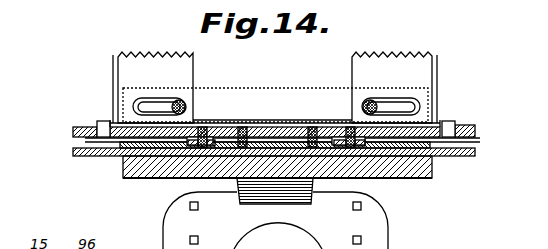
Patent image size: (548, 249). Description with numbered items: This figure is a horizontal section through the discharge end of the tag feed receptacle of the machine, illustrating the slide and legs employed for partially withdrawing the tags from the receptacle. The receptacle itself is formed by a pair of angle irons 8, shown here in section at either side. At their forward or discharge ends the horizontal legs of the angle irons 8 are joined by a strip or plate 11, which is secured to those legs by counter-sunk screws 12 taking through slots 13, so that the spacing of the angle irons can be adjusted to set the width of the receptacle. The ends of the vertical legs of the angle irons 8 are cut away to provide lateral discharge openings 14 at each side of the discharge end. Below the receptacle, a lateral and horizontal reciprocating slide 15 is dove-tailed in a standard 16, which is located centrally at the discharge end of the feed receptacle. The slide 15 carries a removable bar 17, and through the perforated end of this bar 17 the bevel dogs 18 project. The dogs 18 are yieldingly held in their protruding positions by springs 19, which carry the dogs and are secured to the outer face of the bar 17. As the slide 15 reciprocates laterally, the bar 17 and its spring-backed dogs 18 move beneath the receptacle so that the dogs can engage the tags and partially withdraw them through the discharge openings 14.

The angle irons 8 is at (275, 87).
The strip or plate 11 is at (275, 105).
The counter-sunk screws 12 is at (187, 106).
The slots 13 is at (139, 98).
The lateral discharge openings 14 is at (109, 122).
The reciprocating slide 15 is at (92, 157).
The standard 16 is at (405, 172).
The removable bar 17 is at (73, 131).
The bevel dogs 18 is at (100, 122).
The springs 19 is at (85, 140).